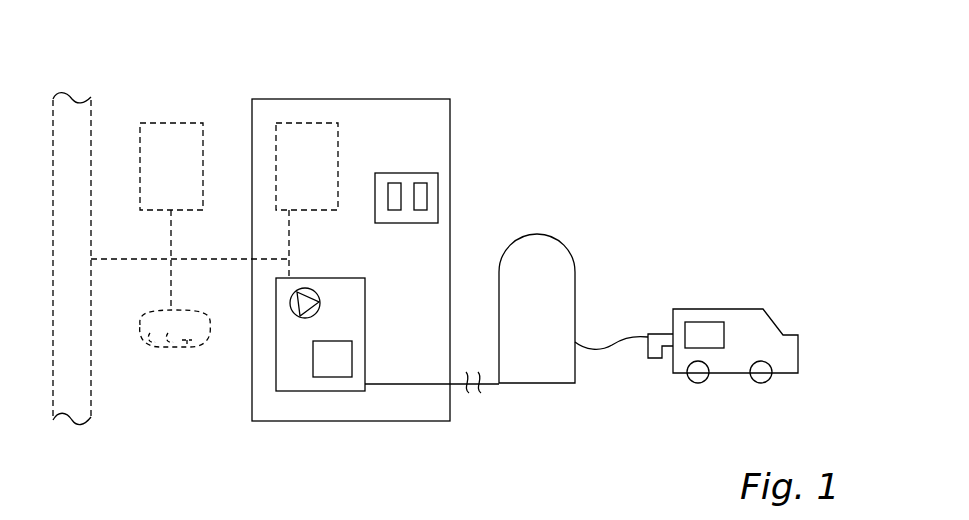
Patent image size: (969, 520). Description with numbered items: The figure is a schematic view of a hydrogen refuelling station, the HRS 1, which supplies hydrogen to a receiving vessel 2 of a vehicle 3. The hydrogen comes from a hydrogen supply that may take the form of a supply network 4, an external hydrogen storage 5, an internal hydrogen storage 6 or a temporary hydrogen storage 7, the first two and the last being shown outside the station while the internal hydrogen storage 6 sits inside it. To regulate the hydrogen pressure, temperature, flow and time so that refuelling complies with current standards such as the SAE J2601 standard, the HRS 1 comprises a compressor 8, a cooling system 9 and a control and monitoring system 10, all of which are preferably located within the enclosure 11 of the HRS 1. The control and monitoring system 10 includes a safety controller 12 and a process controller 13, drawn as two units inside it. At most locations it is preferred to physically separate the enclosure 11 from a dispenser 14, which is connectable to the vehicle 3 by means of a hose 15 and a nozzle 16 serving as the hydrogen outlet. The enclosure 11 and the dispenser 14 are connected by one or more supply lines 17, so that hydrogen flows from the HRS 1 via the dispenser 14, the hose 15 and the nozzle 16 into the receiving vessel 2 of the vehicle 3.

The HRS 1 is at (640, 67).
The receiving vessel 2 is at (708, 322).
The vehicle 3 is at (772, 317).
The supply network 4 is at (84, 110).
The external hydrogen storage 5 is at (177, 123).
The internal hydrogen storage 6 is at (304, 123).
The temporary hydrogen storage 7 is at (187, 330).
The compressor 8 is at (290, 300).
The cooling system 9 is at (332, 378).
The control and monitoring system 10 is at (438, 202).
The enclosure 11 is at (355, 99).
The safety controller 12 is at (396, 183).
The process controller 13 is at (422, 183).
The dispenser 14 is at (568, 242).
The hose 15 is at (625, 337).
The nozzle 16 is at (653, 360).
The supply lines 17 is at (468, 393).